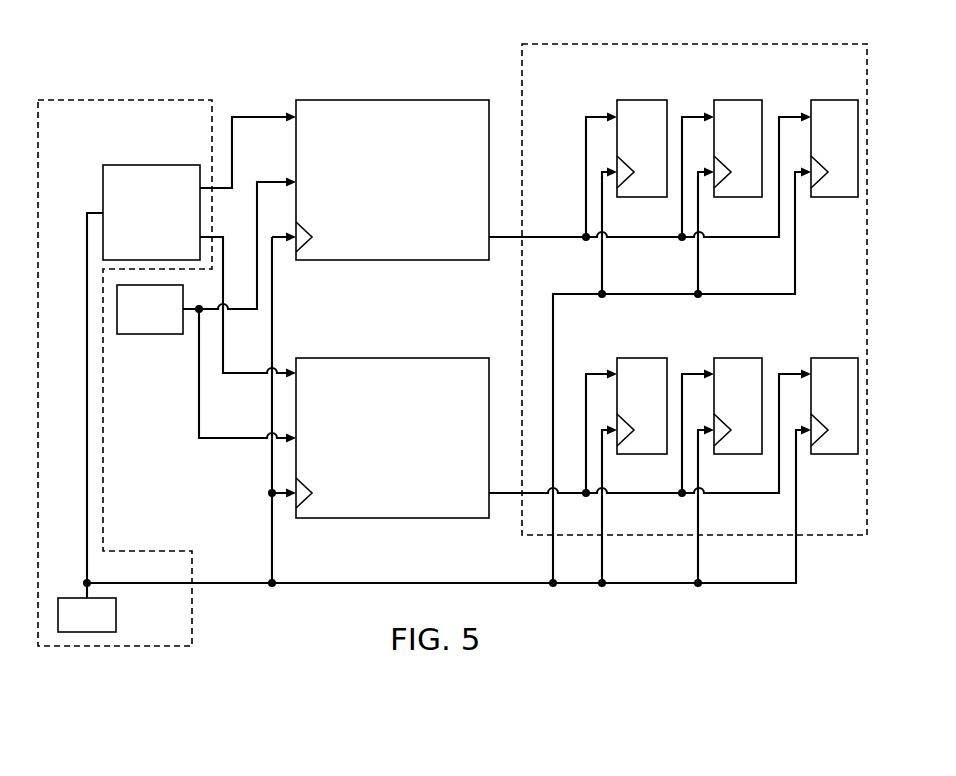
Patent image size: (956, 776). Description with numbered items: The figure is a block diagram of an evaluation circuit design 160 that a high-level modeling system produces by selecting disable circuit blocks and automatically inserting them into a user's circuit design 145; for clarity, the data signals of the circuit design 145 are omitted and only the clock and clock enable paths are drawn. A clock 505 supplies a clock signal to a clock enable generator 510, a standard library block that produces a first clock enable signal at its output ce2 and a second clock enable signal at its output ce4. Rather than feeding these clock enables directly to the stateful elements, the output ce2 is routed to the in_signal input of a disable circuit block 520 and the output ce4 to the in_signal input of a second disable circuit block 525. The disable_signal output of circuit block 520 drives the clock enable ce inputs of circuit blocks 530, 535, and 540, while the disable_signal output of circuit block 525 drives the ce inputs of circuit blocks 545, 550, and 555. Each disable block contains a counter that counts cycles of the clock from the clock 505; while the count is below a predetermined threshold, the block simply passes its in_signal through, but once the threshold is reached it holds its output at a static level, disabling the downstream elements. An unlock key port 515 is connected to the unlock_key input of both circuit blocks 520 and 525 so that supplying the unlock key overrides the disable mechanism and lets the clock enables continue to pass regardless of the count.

The circuit design 145 is at (102, 99).
The evaluation circuit design 160 is at (448, 52).
The clock 505 is at (117, 604).
The clock enable generator 510 is at (163, 165).
The unlock key port 515 is at (166, 334).
The circuit block 520 is at (332, 100).
The circuit block 525 is at (377, 358).
The circuit block 530 is at (637, 100).
The circuit block 535 is at (732, 100).
The circuit block 540 is at (827, 100).
The circuit block 545 is at (637, 358).
The circuit block 550 is at (732, 358).
The circuit block 555 is at (827, 358).